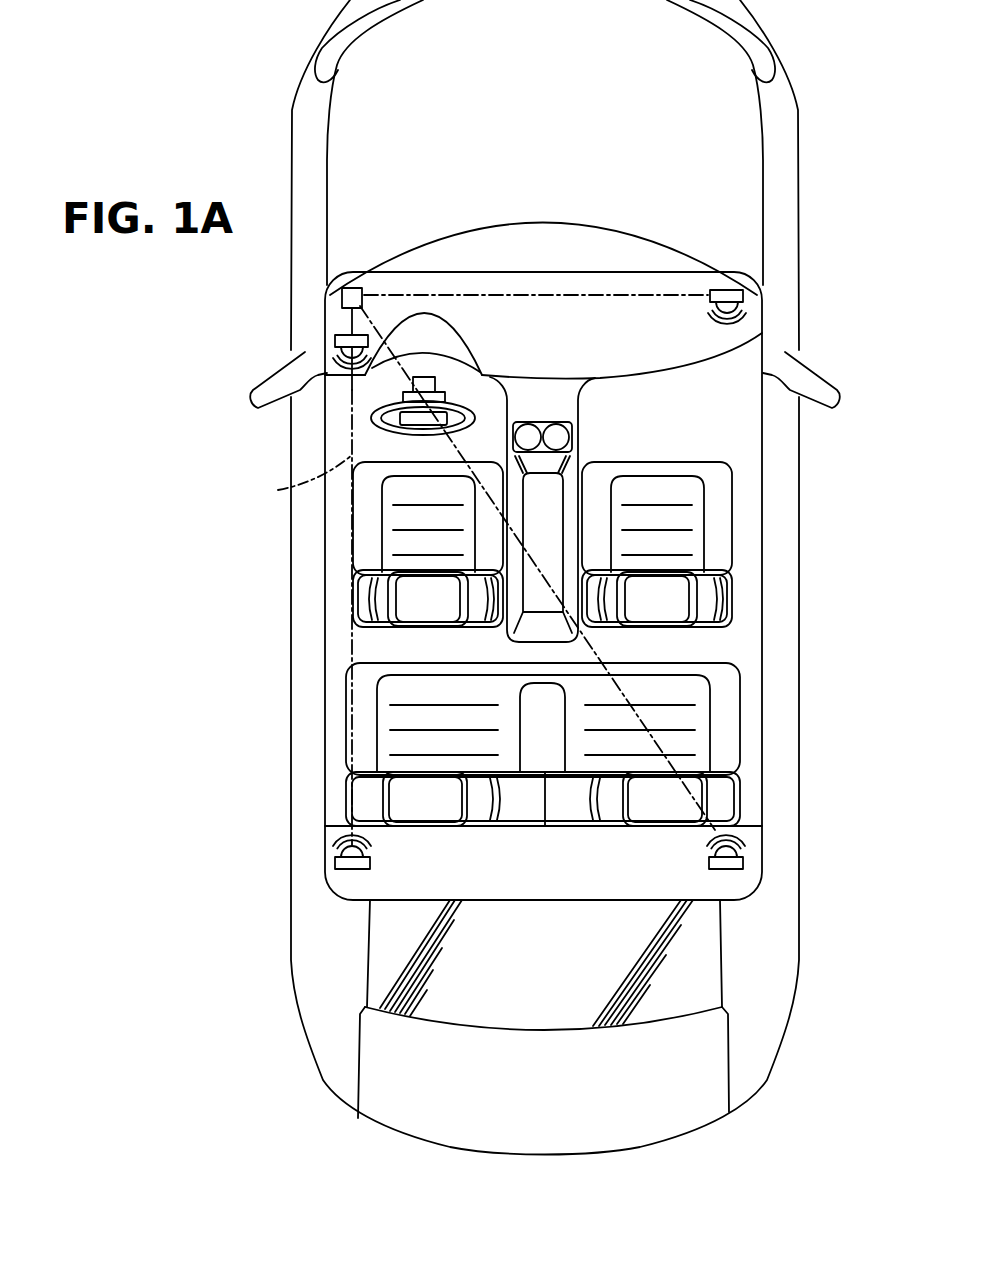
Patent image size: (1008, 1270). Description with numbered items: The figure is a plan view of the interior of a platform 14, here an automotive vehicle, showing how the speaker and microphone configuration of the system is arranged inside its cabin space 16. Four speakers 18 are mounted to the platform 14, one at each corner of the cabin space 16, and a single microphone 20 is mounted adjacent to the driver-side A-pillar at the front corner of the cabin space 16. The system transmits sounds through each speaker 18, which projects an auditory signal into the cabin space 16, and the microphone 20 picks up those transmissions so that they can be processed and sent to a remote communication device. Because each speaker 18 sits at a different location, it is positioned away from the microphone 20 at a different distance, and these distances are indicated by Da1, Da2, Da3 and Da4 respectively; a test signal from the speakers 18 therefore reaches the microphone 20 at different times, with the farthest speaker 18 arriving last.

The platform 14 is at (812, 508).
The cabin space 16 is at (340, 527).
The speaker 18 is at (336, 342).
The microphone 20 is at (349, 289).
The distance Da1 is at (343, 318).
The distance Da2 is at (565, 295).
The distance Da3 is at (294, 479).
The distance Da4 is at (592, 640).